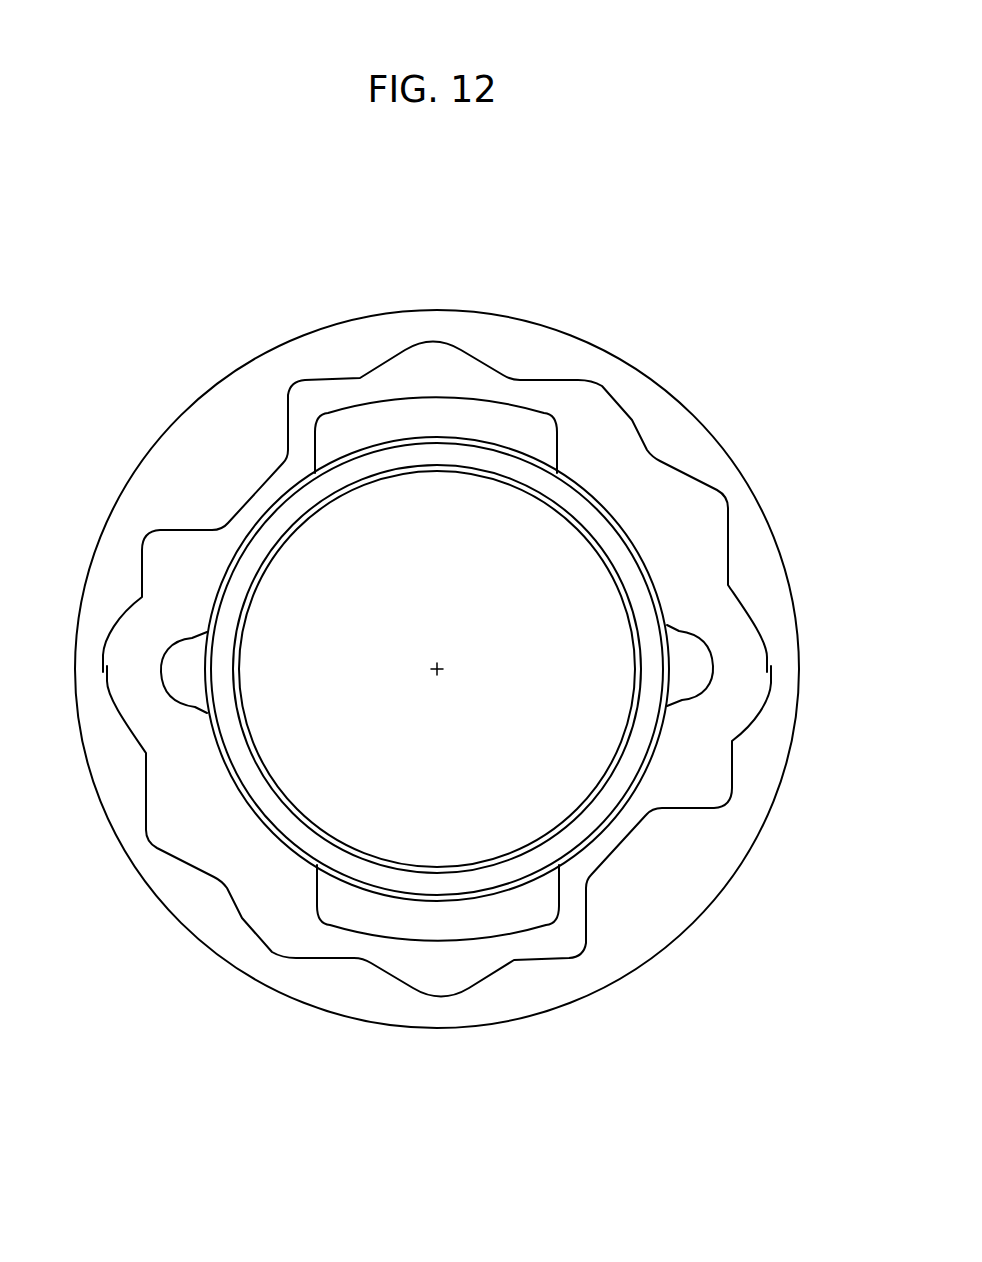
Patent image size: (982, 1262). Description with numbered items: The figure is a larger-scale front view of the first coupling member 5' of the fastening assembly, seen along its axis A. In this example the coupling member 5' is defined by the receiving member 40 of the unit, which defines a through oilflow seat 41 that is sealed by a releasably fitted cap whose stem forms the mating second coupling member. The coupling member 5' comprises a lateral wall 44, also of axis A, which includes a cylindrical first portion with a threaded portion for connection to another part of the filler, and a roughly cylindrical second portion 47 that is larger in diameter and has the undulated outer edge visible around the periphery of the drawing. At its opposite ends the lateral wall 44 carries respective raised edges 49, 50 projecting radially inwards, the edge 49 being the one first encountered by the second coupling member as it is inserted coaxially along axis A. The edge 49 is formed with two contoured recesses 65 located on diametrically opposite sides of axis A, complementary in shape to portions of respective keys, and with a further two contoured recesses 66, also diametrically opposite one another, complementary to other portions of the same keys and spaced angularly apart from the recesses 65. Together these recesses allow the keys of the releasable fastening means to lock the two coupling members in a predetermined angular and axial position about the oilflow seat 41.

The first coupling member 5' is at (437, 609).
The receiving member 40 is at (404, 1050).
The through oilflow seat 41 is at (525, 812).
The lateral wall 44 is at (745, 455).
The second portion 47 is at (660, 423).
The raised edge 49 is at (257, 498).
The raised edge 50 is at (633, 760).
The contoured recesses 65 is at (433, 410).
The contoured recesses 66 is at (176, 670).
The axis A is at (437, 670).